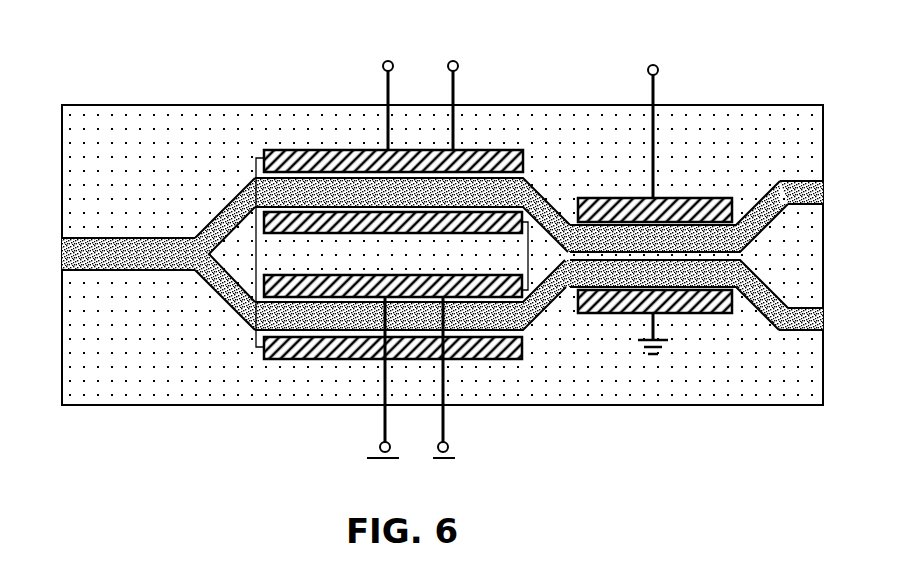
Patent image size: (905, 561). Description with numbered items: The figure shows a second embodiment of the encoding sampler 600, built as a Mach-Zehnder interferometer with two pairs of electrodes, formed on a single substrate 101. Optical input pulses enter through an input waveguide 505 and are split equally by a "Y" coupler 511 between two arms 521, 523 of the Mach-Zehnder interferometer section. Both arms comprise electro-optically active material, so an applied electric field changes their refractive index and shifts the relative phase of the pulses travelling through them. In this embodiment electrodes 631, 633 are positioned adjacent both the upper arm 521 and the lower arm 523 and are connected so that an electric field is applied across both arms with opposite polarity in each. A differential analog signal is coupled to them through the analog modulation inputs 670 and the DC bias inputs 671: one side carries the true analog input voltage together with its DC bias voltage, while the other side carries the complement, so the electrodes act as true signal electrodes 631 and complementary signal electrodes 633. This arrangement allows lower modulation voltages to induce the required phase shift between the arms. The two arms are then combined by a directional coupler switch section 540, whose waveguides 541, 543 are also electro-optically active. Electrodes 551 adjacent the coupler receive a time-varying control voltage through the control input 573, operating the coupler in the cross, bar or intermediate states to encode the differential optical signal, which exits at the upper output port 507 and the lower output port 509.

The Mach-Zehnder modulator 600 is at (262, 49).
The substrate 101 is at (140, 103).
The input waveguide 505 is at (58, 258).
The upper output port 507 is at (823, 190).
The lower output port 509 is at (823, 320).
The "Y" coupler 511 is at (191, 283).
The interferometer arm 521 is at (529, 178).
The interferometer arm 523 is at (260, 334).
The directional coupler switch section 540 is at (680, 326).
The waveguide 541 is at (739, 222).
The waveguide 543 is at (735, 292).
The electrodes 551 is at (697, 198).
The directional coupler switch section control input 573 is at (657, 98).
The "true" signal electrodes 631 is at (300, 148).
The complementary signal electrodes 633 is at (430, 234).
The modulation voltage terminals 670 is at (385, 100).
The bias voltage terminals 671 is at (457, 100).